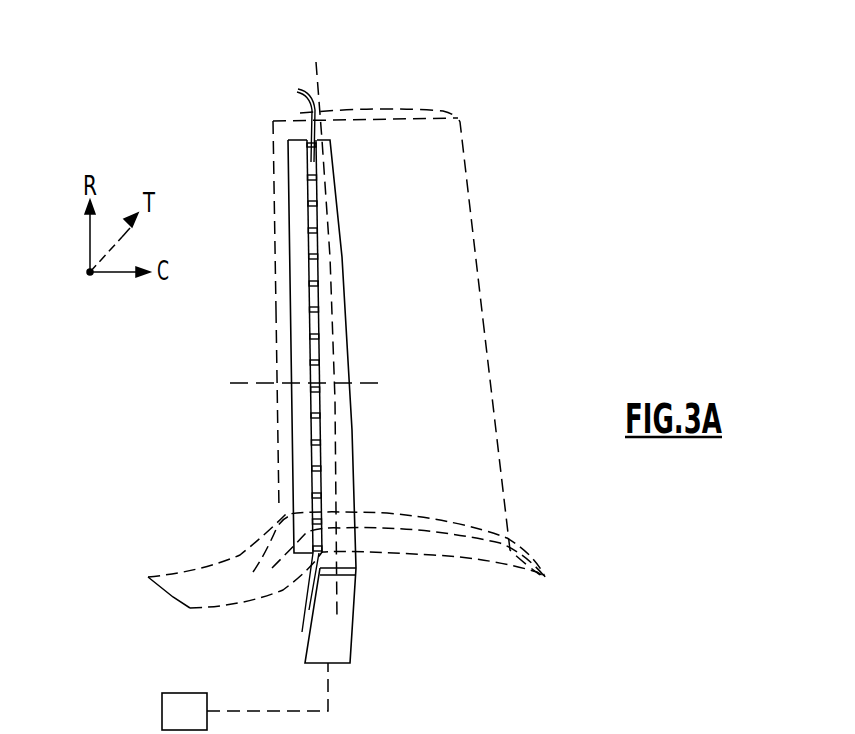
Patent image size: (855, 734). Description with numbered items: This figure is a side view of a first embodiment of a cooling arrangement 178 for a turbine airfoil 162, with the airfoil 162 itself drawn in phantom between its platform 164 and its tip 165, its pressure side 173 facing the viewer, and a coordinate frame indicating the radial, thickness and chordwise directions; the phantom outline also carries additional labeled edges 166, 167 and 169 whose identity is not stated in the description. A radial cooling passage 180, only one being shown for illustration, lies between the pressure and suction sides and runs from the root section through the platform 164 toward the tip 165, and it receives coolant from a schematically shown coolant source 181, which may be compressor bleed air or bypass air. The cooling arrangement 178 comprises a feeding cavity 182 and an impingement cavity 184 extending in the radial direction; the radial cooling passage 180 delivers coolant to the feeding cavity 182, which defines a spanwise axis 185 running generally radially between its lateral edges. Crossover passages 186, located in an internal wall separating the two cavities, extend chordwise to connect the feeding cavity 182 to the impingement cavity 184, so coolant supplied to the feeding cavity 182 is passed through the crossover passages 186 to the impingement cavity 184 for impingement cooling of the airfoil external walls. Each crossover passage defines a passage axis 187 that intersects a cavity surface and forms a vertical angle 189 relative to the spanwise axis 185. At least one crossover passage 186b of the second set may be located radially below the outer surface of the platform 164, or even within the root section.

The airfoil 162 is at (197, 124).
The platform 164 is at (173, 597).
The tip 165 is at (420, 112).
The leading edge 166 is at (268, 327).
The pressure side wall 167 is at (278, 270).
The suction side wall 169 is at (482, 300).
The pressure side 173 is at (490, 403).
The cooling arrangement 178 is at (357, 128).
The radial cooling passage 180 is at (355, 628).
The coolant source 181 is at (162, 710).
The feeding cavity 182 is at (340, 217).
The impingement cavity 184 is at (287, 168).
The spanwise axis 185 is at (338, 588).
The crossover passages 186 is at (286, 119).
The second set of crossover passages 186b is at (313, 612).
The passage axis 187 is at (243, 378).
The vertical angle 189 is at (335, 404).